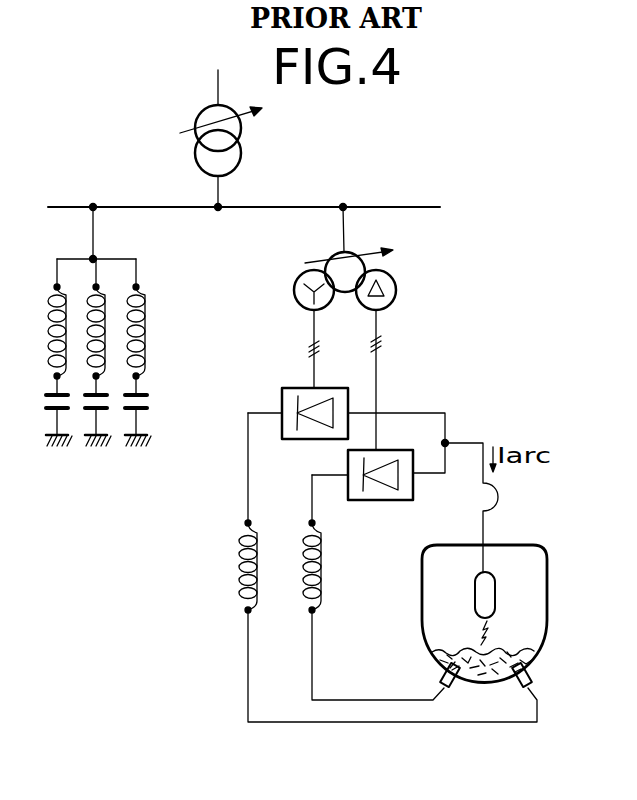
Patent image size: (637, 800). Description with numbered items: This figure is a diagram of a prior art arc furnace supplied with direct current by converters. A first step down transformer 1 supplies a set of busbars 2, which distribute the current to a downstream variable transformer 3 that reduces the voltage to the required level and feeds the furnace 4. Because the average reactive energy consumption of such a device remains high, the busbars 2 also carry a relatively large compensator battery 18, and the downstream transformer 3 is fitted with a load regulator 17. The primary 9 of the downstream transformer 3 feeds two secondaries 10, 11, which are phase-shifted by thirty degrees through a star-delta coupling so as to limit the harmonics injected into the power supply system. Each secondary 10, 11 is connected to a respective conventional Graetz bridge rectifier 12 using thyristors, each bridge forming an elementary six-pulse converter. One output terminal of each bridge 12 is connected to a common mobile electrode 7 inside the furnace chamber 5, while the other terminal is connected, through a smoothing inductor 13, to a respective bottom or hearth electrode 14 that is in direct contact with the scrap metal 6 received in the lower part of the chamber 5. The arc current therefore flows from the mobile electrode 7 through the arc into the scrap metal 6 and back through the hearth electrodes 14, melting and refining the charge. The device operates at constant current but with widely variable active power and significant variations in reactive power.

The step down transformer 1 is at (241, 139).
The busbars 2 is at (383, 205).
The variable transformer 3 is at (351, 273).
The furnace 4 is at (491, 609).
The furnace chamber 5 is at (421, 617).
The scrap metal 6 is at (496, 655).
The mobile electrode 7 is at (492, 602).
The primary 9 is at (336, 254).
The secondary 10 is at (302, 307).
The secondary 11 is at (395, 307).
The Graetz bridge rectifier 12 is at (294, 392).
The smoothing inductor 13 is at (241, 566).
The hearth electrode 14 is at (442, 678).
The load regulator 17 is at (374, 251).
The compensator battery 18 is at (159, 307).